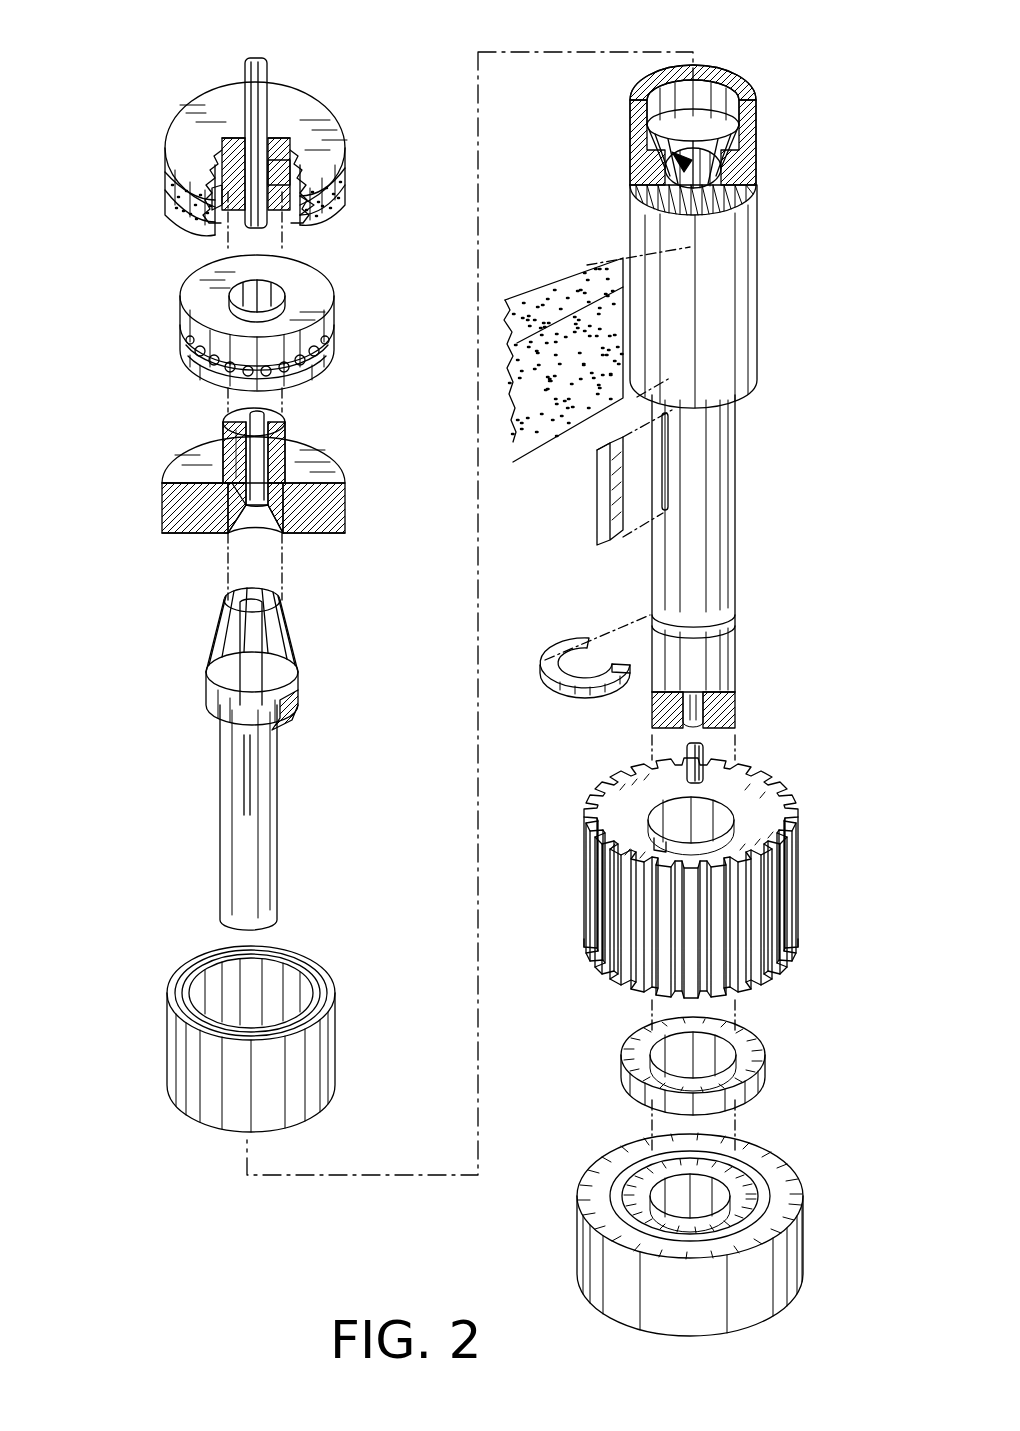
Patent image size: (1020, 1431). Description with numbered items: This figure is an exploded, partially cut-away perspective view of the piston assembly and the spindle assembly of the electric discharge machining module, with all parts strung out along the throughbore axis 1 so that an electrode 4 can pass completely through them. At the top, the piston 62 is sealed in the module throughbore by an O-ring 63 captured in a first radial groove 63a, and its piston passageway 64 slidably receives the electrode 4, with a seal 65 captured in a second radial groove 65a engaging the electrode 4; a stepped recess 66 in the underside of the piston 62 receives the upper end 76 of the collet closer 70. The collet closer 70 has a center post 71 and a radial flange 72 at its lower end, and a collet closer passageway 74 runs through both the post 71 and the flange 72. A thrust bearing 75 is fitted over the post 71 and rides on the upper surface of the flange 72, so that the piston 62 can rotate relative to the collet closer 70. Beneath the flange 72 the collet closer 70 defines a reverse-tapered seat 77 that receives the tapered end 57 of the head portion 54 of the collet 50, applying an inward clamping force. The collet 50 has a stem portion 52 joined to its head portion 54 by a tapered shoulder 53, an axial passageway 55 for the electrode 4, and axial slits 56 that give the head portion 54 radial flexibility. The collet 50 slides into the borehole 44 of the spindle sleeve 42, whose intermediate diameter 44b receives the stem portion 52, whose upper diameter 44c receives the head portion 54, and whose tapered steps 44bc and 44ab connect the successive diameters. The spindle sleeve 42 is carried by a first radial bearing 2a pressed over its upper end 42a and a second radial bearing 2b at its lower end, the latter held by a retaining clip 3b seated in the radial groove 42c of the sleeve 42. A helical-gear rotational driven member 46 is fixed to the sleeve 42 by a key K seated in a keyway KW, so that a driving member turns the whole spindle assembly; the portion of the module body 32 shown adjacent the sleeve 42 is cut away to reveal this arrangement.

The throughbore axis 1 is at (255, 38).
The electrode 4 is at (267, 62).
The first radial bearing 2a is at (178, 1062).
The second radial bearing 2b is at (780, 1258).
The retaining clip 3b is at (552, 685).
The housing wall 32 is at (542, 437).
The spindle sleeve 42 is at (686, 364).
The upper end of the spindle sleeve 42a is at (720, 77).
The radial groove of the sleeve 42c is at (710, 620).
The borehole 44 is at (680, 117).
The tapered step 44ab is at (705, 707).
The intermediate diameter 44b is at (640, 200).
The tapered step 44bc is at (662, 143).
The upper diameter 44c is at (722, 100).
The rotational driven member 46 is at (691, 878).
The collet 50 is at (252, 759).
The stem portion 52 is at (256, 870).
The tapered shoulder 53 is at (285, 713).
The head portion 54 is at (215, 700).
The axial passageway 55 is at (272, 596).
The axial slits 56 is at (225, 655).
The tapered end 57 is at (215, 672).
The piston 62 is at (267, 152).
The O-ring 63 is at (348, 182).
The first radial groove 63a is at (340, 200).
The piston passageway 64 is at (265, 125).
The seal 65 is at (220, 140).
The second radial groove 65a is at (232, 177).
The stepped recess 66 is at (277, 185).
The collet closer 70 is at (210, 491).
The center post 71 is at (232, 447).
The radial flange 72 is at (190, 530).
The collet closer passageway 74 is at (247, 440).
The thrust bearing 75 is at (307, 302).
The upper end of the collet closer post 76 is at (230, 415).
The reverse-tapered seat 77 is at (275, 520).
The key K is at (597, 507).
The keyway KW is at (655, 840).